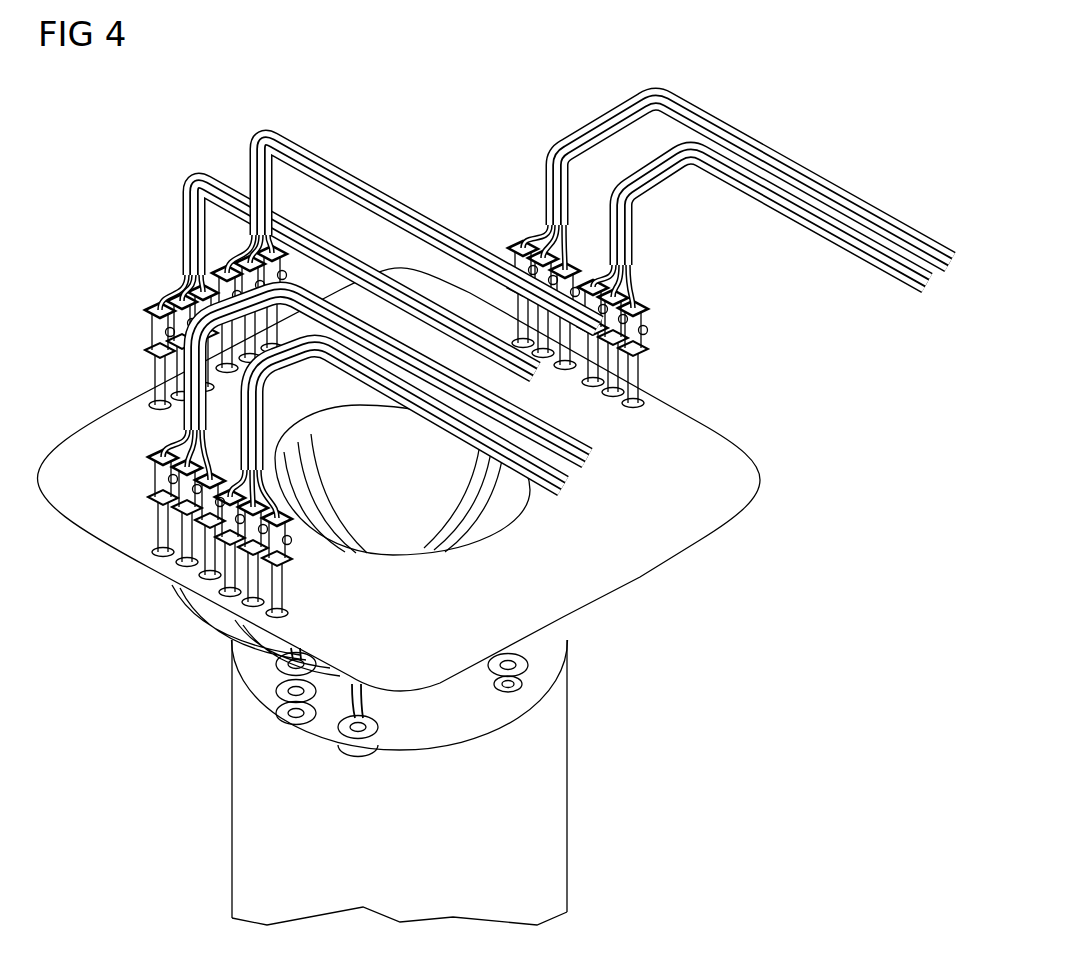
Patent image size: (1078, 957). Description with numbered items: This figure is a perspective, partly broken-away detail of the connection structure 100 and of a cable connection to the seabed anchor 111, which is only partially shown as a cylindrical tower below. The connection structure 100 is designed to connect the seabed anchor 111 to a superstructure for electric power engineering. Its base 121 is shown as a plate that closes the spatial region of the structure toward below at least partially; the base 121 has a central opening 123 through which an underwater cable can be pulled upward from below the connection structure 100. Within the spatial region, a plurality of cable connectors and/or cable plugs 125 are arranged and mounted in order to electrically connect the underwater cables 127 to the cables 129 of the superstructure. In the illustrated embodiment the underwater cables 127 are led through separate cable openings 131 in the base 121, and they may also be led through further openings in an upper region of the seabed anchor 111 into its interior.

The connection structure 100 is at (848, 128).
The seabed anchor 111 is at (554, 823).
The base 121 is at (697, 520).
The central opening 123 is at (354, 410).
The cable connectors and/or cable plugs 125 is at (134, 326).
The underwater cable 127 is at (308, 446).
The cable of the superstructure 129 is at (180, 256).
The cable openings 131 is at (162, 400).